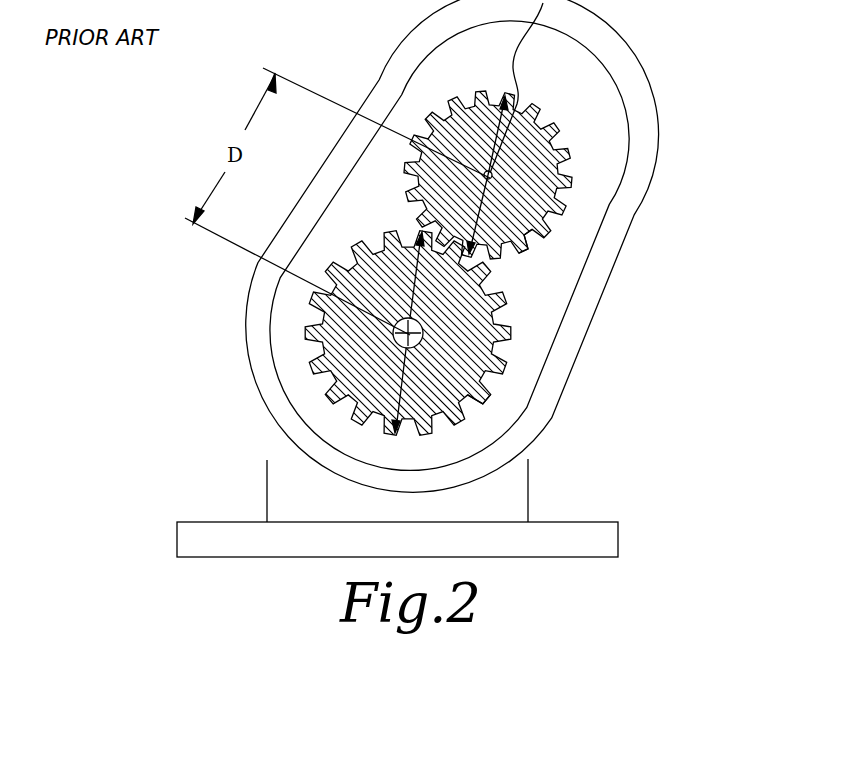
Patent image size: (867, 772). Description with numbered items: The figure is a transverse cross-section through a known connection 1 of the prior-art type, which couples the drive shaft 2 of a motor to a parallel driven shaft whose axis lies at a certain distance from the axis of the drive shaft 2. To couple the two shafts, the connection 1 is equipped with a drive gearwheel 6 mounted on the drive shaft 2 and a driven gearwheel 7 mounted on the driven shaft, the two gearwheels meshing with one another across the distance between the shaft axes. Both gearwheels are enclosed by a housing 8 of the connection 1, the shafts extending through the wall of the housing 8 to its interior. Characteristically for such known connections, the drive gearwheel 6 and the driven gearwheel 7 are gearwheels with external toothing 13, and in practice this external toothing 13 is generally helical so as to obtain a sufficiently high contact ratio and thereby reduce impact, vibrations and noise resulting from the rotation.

The connection 1 is at (717, 61).
The drive shaft 2 is at (395, 338).
The drive gearwheel 6 is at (443, 363).
The driven gearwheel 7 is at (527, 153).
The housing 8 is at (407, 67).
The external toothing 13 is at (545, 240).